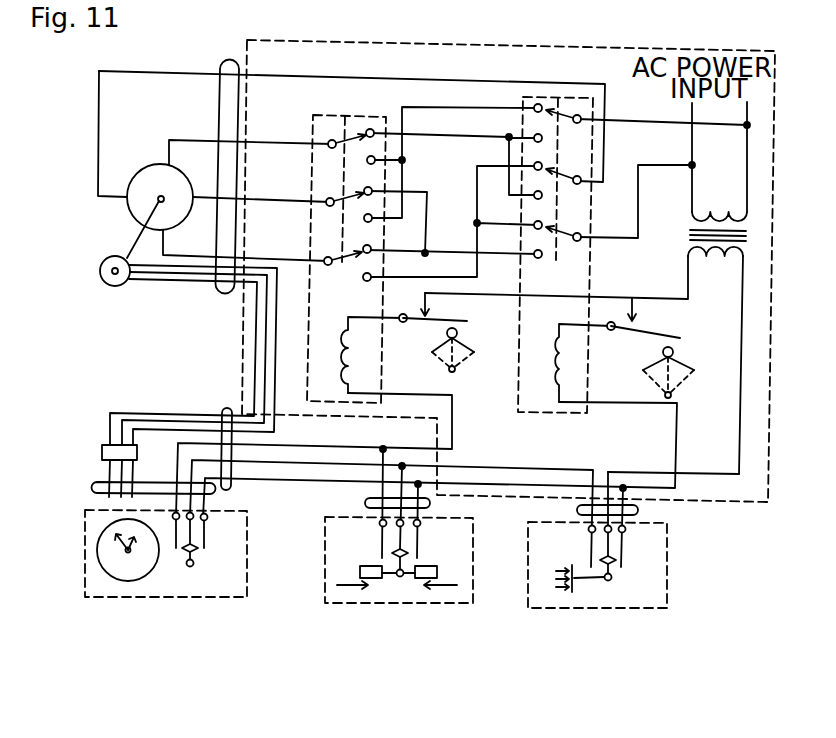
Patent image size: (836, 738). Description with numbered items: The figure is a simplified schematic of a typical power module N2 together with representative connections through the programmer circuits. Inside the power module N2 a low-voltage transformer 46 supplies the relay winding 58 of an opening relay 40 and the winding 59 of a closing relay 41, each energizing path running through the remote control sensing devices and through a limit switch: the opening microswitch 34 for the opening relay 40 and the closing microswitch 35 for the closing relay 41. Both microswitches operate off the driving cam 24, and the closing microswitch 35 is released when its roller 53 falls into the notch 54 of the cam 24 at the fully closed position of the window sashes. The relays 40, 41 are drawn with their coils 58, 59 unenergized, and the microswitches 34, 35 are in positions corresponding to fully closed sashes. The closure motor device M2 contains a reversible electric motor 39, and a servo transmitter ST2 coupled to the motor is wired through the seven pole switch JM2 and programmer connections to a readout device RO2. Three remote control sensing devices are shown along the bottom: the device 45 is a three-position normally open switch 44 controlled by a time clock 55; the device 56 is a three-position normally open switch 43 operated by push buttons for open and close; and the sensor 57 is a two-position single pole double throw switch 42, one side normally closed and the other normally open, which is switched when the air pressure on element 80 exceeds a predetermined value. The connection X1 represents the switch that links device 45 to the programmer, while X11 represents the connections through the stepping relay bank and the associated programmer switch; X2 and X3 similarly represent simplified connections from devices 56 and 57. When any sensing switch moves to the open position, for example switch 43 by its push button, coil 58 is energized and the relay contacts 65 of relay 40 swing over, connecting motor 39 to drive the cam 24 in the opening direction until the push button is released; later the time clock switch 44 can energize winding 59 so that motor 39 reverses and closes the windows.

The power module N2 is at (248, 50).
The closure motor device M2 is at (160, 197).
The reversible electric motor 39 is at (158, 201).
The servo transmitter ST2 is at (112, 288).
The seven pole switch JM2 is at (213, 292).
The simplified connections through stepping relay bank and switch JN2 X11 is at (226, 412).
The readout device RO2 is at (102, 453).
The connection of switch JD2 X1 is at (217, 492).
The alternate simplified connections through switch JN2, stepping bank and switch JD X2 is at (433, 504).
The simplified connections through switch JN2, bank and switch JD4 X3 is at (640, 512).
The opening relay 40 is at (373, 242).
The relay contacts 65 is at (345, 137).
The relay winding 58 is at (337, 362).
The opening microswitch 34 is at (397, 326).
The closing relay 41 is at (592, 258).
The winding 59 is at (572, 380).
The closing microswitch 35 is at (648, 322).
The roller 53 is at (460, 334).
The notch 54 is at (687, 362).
The driving cam 24 is at (581, 382).
The low-voltage transformer 46 is at (688, 240).
The three-position normally open switch 44 is at (132, 572).
The remote control sensing device 45 is at (113, 549).
The time clock 55 is at (106, 564).
The remote control sensing device 56 is at (392, 579).
The three-position normally open switch 43 is at (358, 566).
The remote control sensor 57 is at (621, 585).
The two-position single pole double throw switch 42 is at (604, 580).
The air pressure element 80 is at (574, 558).